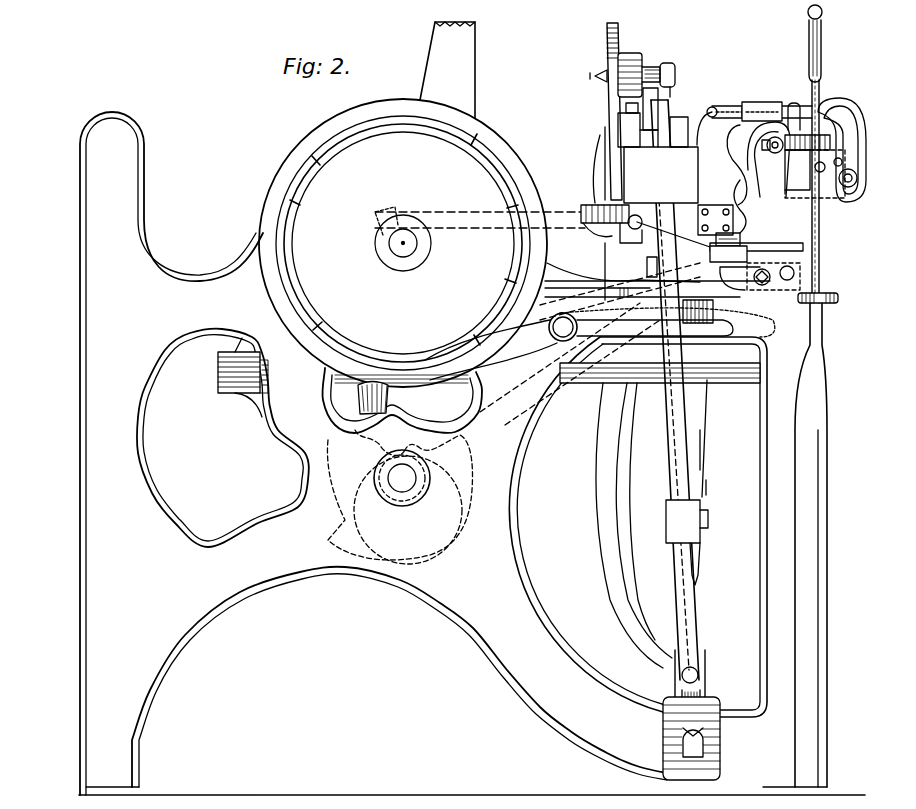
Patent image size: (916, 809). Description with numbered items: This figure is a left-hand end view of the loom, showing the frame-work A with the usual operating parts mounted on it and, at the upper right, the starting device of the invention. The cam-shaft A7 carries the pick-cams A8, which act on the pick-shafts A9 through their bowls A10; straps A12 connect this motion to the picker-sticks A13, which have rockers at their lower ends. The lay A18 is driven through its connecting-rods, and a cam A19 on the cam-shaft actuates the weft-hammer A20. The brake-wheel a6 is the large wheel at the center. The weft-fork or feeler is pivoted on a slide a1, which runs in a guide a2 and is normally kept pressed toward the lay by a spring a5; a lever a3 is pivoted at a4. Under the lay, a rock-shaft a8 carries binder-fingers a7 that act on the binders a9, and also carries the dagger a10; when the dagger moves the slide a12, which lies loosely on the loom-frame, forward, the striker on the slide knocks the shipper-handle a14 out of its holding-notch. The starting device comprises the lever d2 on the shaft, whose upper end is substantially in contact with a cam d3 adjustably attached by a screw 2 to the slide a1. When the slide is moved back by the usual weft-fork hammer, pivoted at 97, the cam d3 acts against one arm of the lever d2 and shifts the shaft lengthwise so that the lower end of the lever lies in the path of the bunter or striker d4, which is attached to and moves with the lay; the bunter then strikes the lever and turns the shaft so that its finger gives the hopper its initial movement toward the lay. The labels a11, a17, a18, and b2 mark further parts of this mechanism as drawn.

The frame-work A is at (320, 560).
The cam-shaft A7 is at (418, 243).
The pick-cams A8 is at (400, 413).
The pick-shafts A9 is at (352, 376).
The bowls A10 is at (372, 400).
The straps A12 is at (674, 482).
The picker-sticks A13 is at (676, 461).
The lay A18 is at (658, 128).
The cam A19 is at (440, 545).
The weft-hammer A20 is at (465, 405).
The slide a1 is at (730, 110).
The guide a2 is at (738, 130).
The lever a3 is at (862, 128).
The pivot a4 is at (860, 180).
The spring a5 is at (865, 162).
The brake-wheel a6 is at (480, 194).
The binder-fingers a7 is at (712, 103).
The rock-shaft a8 is at (630, 226).
The binders a9 is at (607, 126).
The dagger a10 is at (698, 210).
The guide a11 is at (606, 160).
The slide a12 is at (710, 258).
The shipper-handle a14 is at (812, 270).
The arm a17 is at (562, 181).
The bar a18 is at (805, 247).
The block b2 is at (803, 158).
The lever d2 is at (752, 165).
The cam d3 is at (762, 101).
The bunter or striker d4 is at (727, 205).
The screw 2 is at (822, 101).
The pivot of weft-fork hammer 97 is at (782, 285).